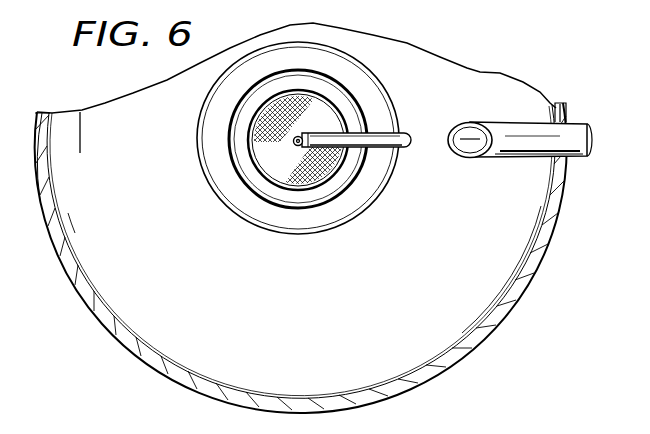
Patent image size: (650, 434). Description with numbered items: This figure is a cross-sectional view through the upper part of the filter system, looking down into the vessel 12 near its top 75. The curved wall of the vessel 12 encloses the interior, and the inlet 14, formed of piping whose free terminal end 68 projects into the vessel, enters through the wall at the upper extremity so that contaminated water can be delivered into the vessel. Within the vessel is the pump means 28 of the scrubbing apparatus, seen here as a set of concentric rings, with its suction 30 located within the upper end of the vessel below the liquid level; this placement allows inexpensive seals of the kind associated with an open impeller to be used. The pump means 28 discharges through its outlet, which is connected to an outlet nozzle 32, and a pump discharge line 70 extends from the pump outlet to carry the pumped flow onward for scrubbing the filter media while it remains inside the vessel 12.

The vessel 12 is at (97, 313).
The inlet 14 is at (522, 155).
The pump means 28 is at (233, 107).
The suction 30 is at (252, 142).
The outlet nozzle 32 is at (295, 144).
The free terminal end of the piping 68 is at (470, 130).
The pump discharge line 70 is at (409, 140).
The top of vessel 75 is at (120, 208).